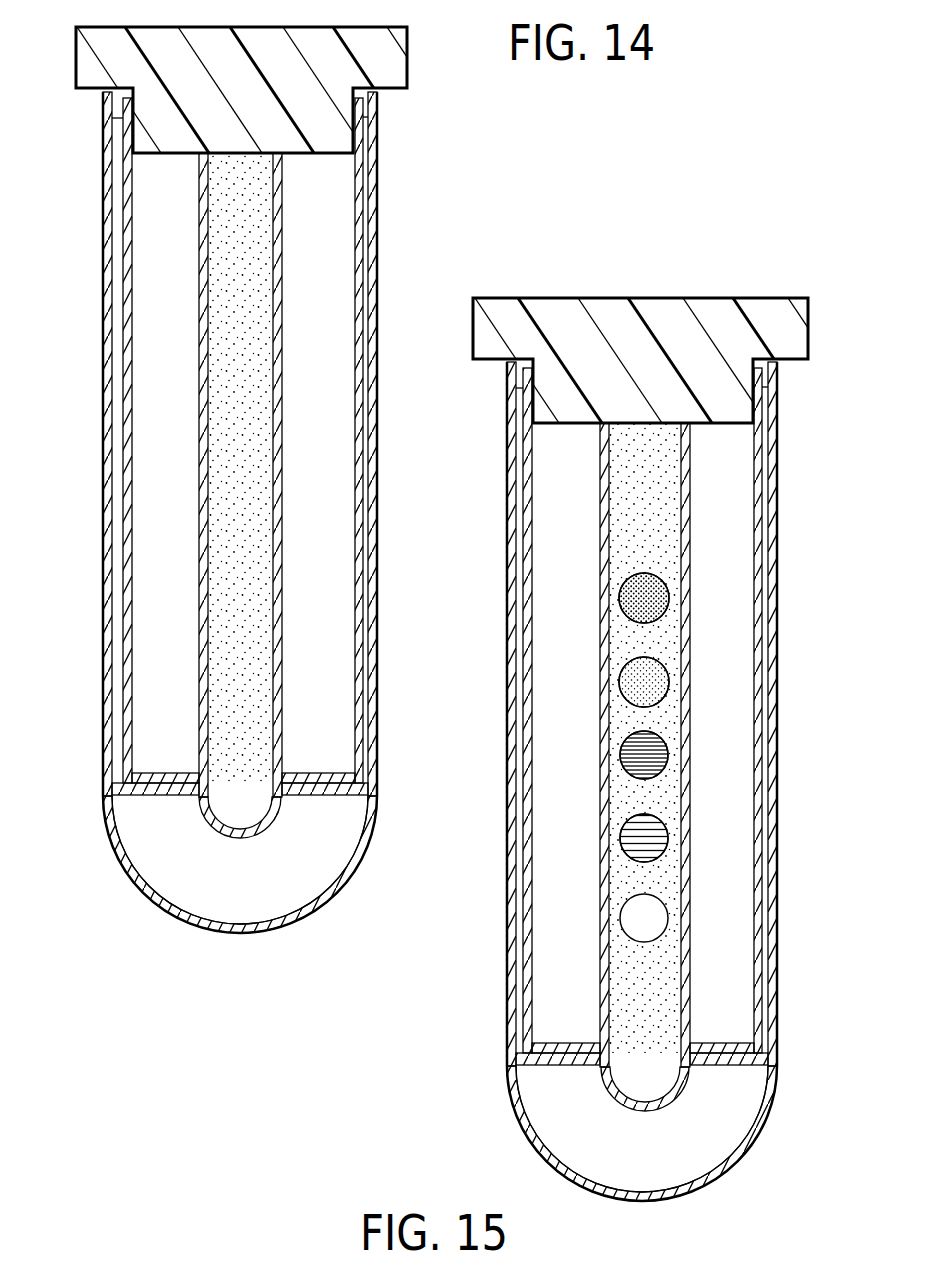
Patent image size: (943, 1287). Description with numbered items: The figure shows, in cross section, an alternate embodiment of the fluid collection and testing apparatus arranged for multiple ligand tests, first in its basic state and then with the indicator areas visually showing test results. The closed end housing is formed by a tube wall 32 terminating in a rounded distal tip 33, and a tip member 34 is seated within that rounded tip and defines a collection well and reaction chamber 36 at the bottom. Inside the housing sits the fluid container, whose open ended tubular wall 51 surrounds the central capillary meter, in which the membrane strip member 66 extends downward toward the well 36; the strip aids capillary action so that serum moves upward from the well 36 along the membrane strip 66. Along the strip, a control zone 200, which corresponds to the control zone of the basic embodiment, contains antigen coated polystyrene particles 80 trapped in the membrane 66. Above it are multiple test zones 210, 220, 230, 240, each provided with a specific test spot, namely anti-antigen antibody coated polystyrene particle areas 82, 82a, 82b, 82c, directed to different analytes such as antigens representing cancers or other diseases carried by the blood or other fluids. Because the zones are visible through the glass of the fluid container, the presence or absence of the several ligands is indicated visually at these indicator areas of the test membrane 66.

In FIG. 14, the tube wall 32 is at (102, 447).
In FIG. 15, the tube wall 32 is at (642, 714).
In FIG. 14, the rounded distal tip 33 is at (170, 913).
In FIG. 15, the rounded distal tip 33 is at (535, 1157).
In FIG. 14, the tip member 34 is at (238, 900).
In FIG. 15, the tip member 34 is at (665, 1167).
In FIG. 14, the collection well and reaction chamber 36 is at (260, 820).
In FIG. 15, the collection well and reaction chamber 36 is at (660, 1100).
In FIG. 14, the tubular wall 51 is at (123, 330).
In FIG. 15, the tubular wall 51 is at (642, 710).
In FIG. 14, the membrane strip member 66 is at (258, 203).
In FIG. 15, the membrane strip member 66 is at (657, 525).
In FIG. 15, the control zone 200 is at (730, 951).
In FIG. 15, the antigen coated polystyrene particles 80 is at (655, 942).
In FIG. 15, the test zone 210 is at (731, 863).
In FIG. 15, the anti-antigen antibody coated polystyrene particles 82 is at (668, 850).
In FIG. 15, the test zone 220 is at (738, 780).
In FIG. 15, the anti-antigen coated polystyrene particle area 82a is at (668, 770).
In FIG. 15, the test zone 230 is at (737, 698).
In FIG. 15, the anti-antigen coated polystyrene particle area 82b is at (668, 700).
In FIG. 15, the test zone 240 is at (738, 600).
In FIG. 15, the anti-antigen coated polystyrene particle area 82c is at (668, 590).